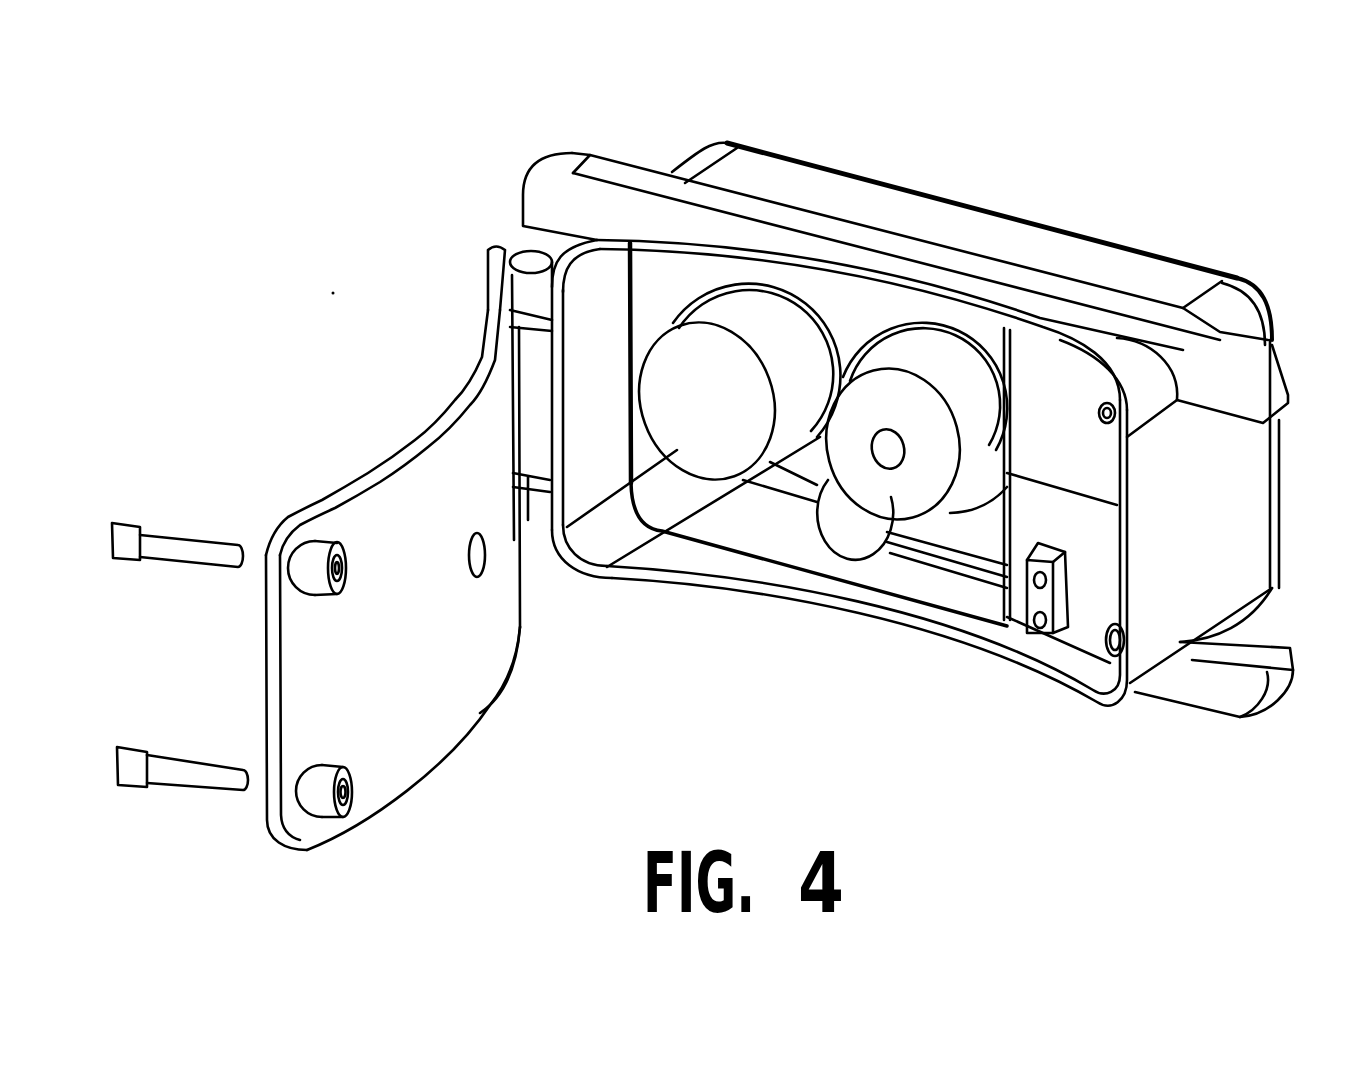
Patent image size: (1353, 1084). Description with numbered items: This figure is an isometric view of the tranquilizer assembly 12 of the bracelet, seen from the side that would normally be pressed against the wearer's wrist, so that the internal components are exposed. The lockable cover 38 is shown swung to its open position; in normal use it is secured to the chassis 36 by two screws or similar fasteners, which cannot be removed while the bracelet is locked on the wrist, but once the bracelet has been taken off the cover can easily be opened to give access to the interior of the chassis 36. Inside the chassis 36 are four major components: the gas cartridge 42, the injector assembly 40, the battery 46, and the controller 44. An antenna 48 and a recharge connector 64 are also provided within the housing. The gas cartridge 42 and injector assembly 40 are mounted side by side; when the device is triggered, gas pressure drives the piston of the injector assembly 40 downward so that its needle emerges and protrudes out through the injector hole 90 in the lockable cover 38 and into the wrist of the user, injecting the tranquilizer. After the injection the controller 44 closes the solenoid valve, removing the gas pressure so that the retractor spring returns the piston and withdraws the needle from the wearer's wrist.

The tranquilizer assembly 12 is at (960, 157).
The chassis 36 is at (1097, 263).
The lockable cover 38 is at (362, 467).
The injector assembly 40 is at (867, 397).
The gas cartridge 42 is at (710, 363).
The controller 44 is at (1092, 615).
The battery 46 is at (1067, 400).
The antenna 48 is at (697, 540).
The recharge connector 64 is at (1050, 622).
The injector hole 90 is at (478, 577).